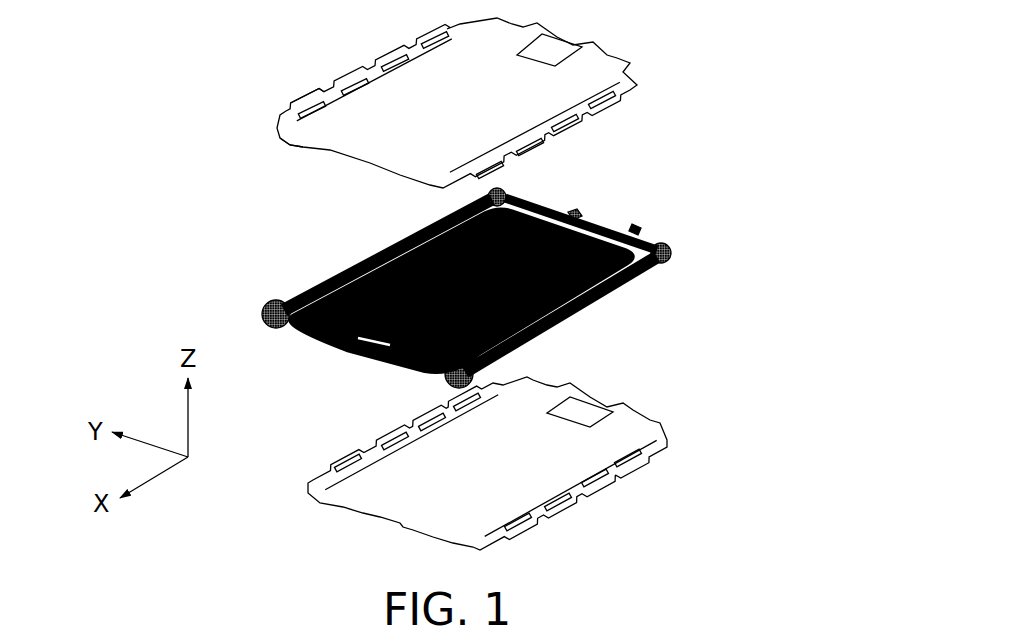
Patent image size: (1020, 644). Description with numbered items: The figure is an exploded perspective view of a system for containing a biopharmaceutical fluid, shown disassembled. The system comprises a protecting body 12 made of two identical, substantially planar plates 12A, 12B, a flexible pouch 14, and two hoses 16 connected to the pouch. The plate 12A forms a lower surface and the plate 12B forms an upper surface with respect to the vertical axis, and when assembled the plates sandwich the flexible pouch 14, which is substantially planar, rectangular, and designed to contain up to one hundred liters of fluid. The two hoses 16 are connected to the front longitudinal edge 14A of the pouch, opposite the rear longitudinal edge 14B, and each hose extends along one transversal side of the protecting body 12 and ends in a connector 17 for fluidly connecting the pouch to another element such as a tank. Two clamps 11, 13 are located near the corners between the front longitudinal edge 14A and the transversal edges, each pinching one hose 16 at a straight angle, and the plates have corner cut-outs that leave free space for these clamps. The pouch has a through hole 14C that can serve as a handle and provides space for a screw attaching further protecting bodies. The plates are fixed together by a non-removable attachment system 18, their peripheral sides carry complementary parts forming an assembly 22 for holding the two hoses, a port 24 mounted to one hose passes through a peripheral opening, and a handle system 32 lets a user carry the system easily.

The clamp 11 is at (505, 192).
The protecting body 12 is at (481, 103).
The plate 12A is at (537, 472).
The plate 12B is at (413, 103).
The clamp 13 is at (670, 252).
The flexible pouch 14 is at (640, 229).
The front longitudinal edge 14A is at (597, 220).
The rear longitudinal edge 14B is at (322, 327).
The through hole 14C is at (366, 341).
The hose 16 is at (358, 265).
The connector 17 is at (262, 311).
The attachment system 18 is at (303, 143).
The assembly for holding the two hoses 22 is at (297, 109).
The port 24 is at (575, 210).
The handle system 32 is at (365, 440).